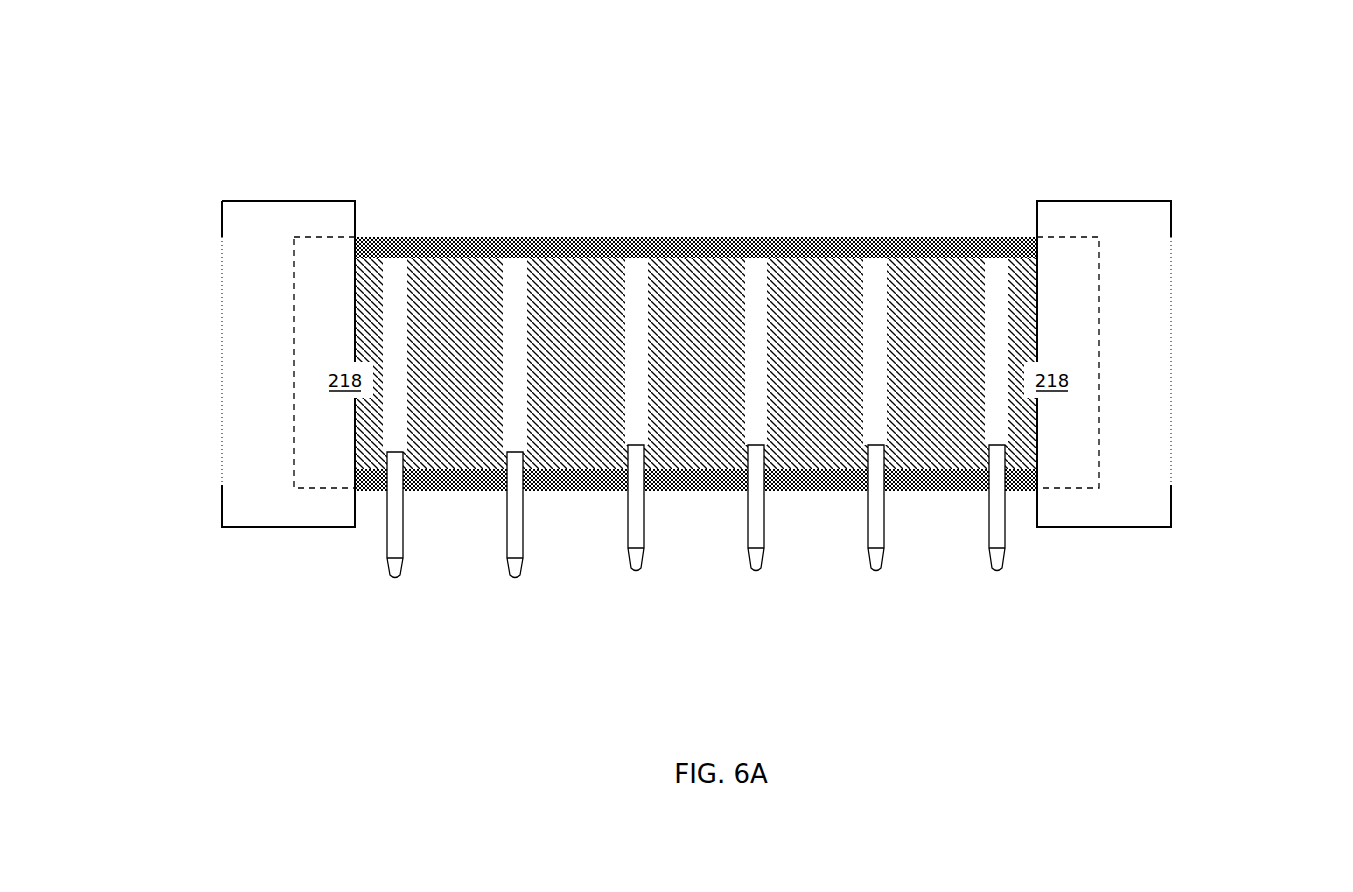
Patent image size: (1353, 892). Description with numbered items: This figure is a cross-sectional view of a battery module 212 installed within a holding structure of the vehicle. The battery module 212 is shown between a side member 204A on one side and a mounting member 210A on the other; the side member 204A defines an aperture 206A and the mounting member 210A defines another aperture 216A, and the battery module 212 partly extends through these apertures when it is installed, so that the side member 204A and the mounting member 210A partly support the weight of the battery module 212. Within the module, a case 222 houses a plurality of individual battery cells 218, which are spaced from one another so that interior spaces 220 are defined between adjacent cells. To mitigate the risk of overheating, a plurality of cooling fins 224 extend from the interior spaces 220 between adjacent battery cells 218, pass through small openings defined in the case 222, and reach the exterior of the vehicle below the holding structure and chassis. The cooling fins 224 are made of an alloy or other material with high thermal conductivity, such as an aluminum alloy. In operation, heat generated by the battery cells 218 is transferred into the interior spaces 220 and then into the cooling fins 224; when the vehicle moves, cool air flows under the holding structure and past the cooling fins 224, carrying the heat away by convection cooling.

The side member 204A is at (1102, 201).
The aperture 206A is at (1171, 233).
The mounting member 210A is at (288, 202).
The battery module 212 is at (888, 237).
The aperture 216A is at (222, 227).
The battery cells 218 is at (1068, 391).
The interior spaces 220 is at (390, 313).
The case 222 is at (407, 237).
The cooling fins 224 is at (997, 572).